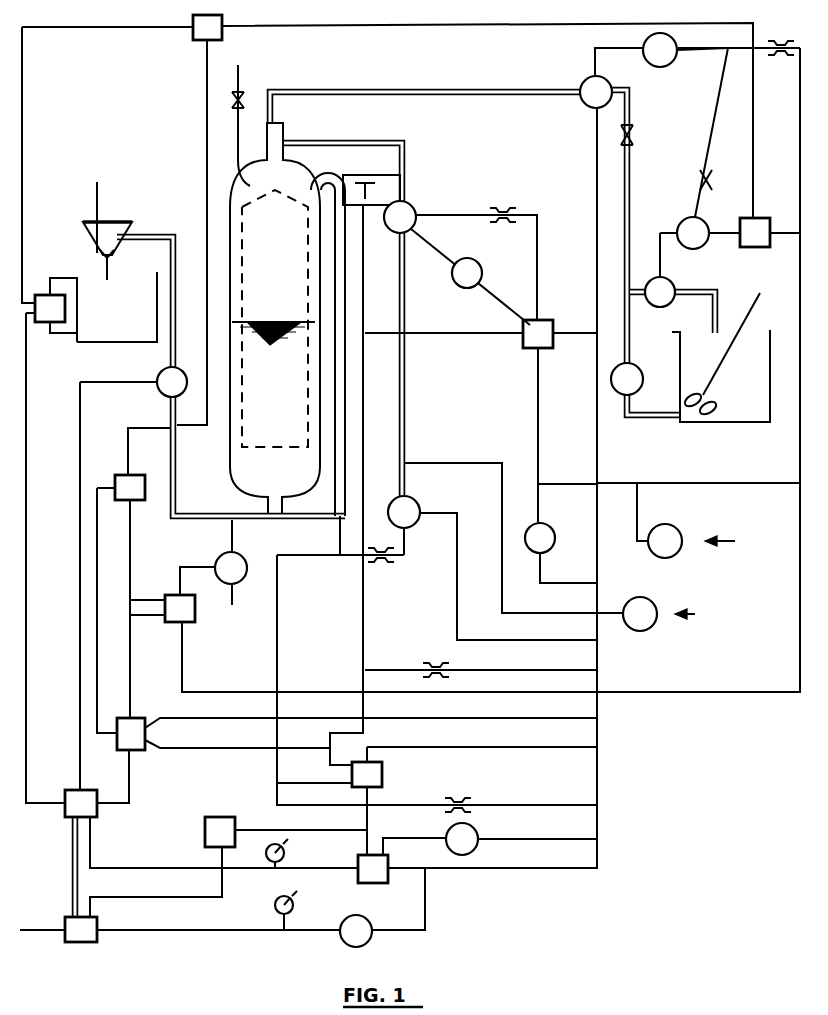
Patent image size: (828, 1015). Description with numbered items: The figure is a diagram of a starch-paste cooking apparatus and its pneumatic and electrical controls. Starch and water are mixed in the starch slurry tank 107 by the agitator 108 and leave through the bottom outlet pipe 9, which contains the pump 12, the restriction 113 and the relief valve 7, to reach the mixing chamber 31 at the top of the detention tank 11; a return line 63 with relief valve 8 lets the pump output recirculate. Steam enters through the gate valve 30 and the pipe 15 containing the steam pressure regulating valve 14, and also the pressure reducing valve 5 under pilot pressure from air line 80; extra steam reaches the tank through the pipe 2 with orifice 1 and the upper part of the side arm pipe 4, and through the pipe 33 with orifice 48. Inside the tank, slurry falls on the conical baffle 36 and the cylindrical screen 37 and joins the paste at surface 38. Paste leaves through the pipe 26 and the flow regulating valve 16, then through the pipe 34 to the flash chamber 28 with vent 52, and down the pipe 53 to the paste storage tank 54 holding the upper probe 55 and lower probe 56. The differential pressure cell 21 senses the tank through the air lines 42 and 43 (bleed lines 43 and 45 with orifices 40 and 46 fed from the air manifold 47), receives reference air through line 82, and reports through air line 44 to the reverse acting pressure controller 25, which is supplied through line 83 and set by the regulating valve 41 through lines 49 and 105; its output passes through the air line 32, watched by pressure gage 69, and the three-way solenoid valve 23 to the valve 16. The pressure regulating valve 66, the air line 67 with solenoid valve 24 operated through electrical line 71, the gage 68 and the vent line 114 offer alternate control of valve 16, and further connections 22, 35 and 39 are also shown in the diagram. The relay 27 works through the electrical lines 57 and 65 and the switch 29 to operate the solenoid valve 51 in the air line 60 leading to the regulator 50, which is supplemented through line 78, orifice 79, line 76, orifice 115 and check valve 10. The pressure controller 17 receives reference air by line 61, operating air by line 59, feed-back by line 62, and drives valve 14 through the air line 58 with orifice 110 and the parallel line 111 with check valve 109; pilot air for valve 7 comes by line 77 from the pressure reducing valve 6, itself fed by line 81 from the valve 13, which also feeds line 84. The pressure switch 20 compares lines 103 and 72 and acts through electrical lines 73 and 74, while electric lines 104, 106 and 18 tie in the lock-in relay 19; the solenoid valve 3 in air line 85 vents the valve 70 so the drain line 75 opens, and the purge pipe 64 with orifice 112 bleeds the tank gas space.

The orifice 1 is at (362, 191).
The pipe 2 is at (380, 170).
The solenoid air valve 3 is at (180, 608).
The side arm pipe 4 is at (312, 172).
The steam pressure reducing valve 5 is at (404, 512).
The pressure reducing valve 6 is at (540, 538).
The relief valve 7 is at (596, 92).
The relief valve 8 is at (660, 292).
The bottom outlet pipe 9 is at (278, 116).
The check valve 10 is at (660, 50).
The detention tank 11 is at (230, 466).
The pump 12 is at (627, 379).
The valve 13 is at (706, 541).
The steam pressure regulating valve 14 is at (400, 217).
The steam pipe 15 is at (342, 143).
The flow regulating valve 16 is at (172, 382).
The pressure controller 17 is at (538, 334).
The electric line 18 is at (206, 66).
The electrical relay 19 is at (130, 487).
The pressure switch 20 is at (131, 734).
The differential pressure cell 21 is at (367, 774).
The controller 22 is at (220, 832).
The three-way solenoid air valve 23 is at (81, 803).
The solenoid valve 24 is at (81, 929).
The reverse acting pressure controller 25 is at (373, 869).
The pipe 26 is at (166, 414).
The electrical relay 27 is at (50, 308).
The flash chamber 28 is at (88, 248).
The switch 29 is at (207, 27).
The gate valve 30 is at (692, 614).
The mixing chamber 31 is at (290, 141).
The air line 32 is at (144, 372).
The steam line 33 is at (324, 555).
The pipe 34 is at (144, 238).
The pipe line 35 is at (405, 484).
The conical baffle 36 is at (287, 212).
The cylindrical screen 37 is at (304, 290).
The surface 38 is at (288, 318).
The control line 39 is at (320, 782).
The fixed orifice 40 is at (459, 796).
The air pressure regulating valve 41 is at (462, 839).
The air line 42 is at (362, 298).
The air line 43 is at (330, 560).
The air line 44 is at (368, 840).
The bleed line 45 is at (365, 670).
The fixed orifice 46 is at (438, 662).
The air manifold 47 is at (460, 882).
The fixed orifice 48 is at (375, 562).
The air line 49 is at (500, 840).
The pressure regulator 50 is at (693, 233).
The solenoid valve 51 is at (755, 232).
The vent 52 is at (96, 194).
The pipe 53 is at (110, 280).
The paste storage tank 54 is at (79, 314).
The upper probe 55 is at (68, 274).
The lower probe 56 is at (62, 341).
The electrical line 57 is at (192, 22).
The air line 58 is at (437, 216).
The air line 59 is at (534, 360).
The air line 60 is at (739, 234).
The air line 61 is at (587, 333).
The air line 62 is at (392, 332).
The starch slurry return line 63 is at (648, 284).
The purge pipe 64 is at (238, 164).
The electric line 65 is at (30, 346).
The pressure regulating valve 66 is at (356, 931).
The air line 67 is at (74, 862).
The pressure gage 68 is at (302, 891).
The pressure gage 69 is at (292, 842).
The valve 70 is at (231, 568).
The electrical line 71 is at (220, 860).
The air line 72 is at (205, 748).
The electrical line 73 is at (118, 770).
The electrical line 74 is at (129, 684).
The drain line 75 is at (239, 540).
The air line 76 is at (594, 48).
The air line 77 is at (594, 118).
The air line 78 is at (750, 48).
The fixed orifice 79 is at (781, 30).
The air line 80 is at (416, 512).
The air line 81 is at (543, 489).
The air line 82 is at (487, 745).
The air line 83 is at (393, 867).
The air line 84 is at (206, 566).
The air line 85 is at (311, 828).
The air line 103 is at (220, 717).
The electric line 104 is at (112, 643).
The air line 105 is at (442, 844).
The electric line 106 is at (129, 560).
The starch slurry tank 107 is at (745, 426).
The agitator 108 is at (714, 382).
The check valve 109 is at (467, 273).
The orifice 110 is at (504, 210).
The parallel air line 111 is at (447, 262).
The fixed small orifice 112 is at (242, 100).
The restriction 113 is at (627, 136).
The air line 114 is at (64, 932).
The fixed orifice 115 is at (704, 182).